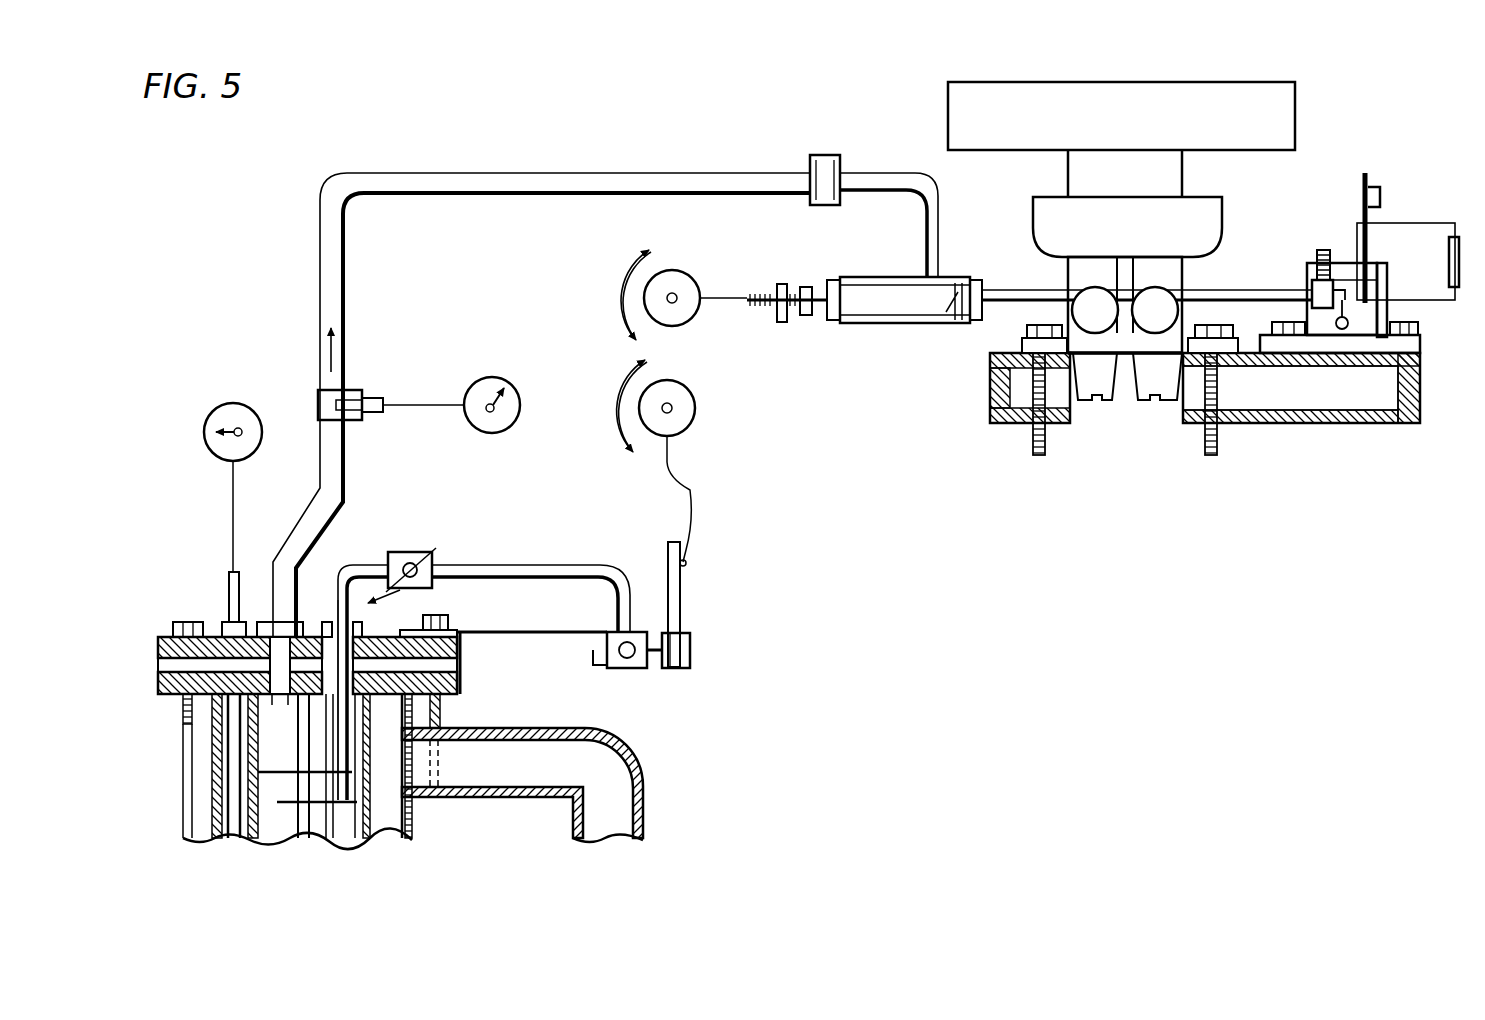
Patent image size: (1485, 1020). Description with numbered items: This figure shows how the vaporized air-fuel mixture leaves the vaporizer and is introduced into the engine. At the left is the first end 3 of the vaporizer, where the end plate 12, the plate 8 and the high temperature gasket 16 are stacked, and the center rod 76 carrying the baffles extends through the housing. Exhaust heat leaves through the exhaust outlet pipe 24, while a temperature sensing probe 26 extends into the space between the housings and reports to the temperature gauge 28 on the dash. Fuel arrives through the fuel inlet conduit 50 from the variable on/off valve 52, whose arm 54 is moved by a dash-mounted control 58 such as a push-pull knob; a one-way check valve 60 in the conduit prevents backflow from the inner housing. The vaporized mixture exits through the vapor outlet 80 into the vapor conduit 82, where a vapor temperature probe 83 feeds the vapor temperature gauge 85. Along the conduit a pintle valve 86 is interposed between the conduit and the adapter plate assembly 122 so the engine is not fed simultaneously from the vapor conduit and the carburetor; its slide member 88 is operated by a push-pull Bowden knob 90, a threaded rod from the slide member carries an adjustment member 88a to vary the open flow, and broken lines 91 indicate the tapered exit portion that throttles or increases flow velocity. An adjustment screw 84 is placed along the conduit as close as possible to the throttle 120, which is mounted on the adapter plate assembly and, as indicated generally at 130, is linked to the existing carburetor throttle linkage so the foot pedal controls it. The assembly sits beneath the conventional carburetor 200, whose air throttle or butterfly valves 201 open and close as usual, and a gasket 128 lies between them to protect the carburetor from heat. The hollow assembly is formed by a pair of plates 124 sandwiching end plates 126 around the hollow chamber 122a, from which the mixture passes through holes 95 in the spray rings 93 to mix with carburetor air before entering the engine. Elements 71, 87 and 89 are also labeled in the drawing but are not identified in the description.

The first end 3 is at (122, 590).
The plate 8 is at (455, 690).
The end plate 12 is at (453, 645).
The high temperature gasket 16 is at (158, 660).
The exhaust outlet pipe 24 is at (618, 742).
The temperature sensing probe 26 is at (229, 590).
The temperature gauge 28 is at (228, 402).
The fuel inlet conduit 50 is at (537, 566).
The variable on/off valve 52 is at (606, 667).
The arm 54 is at (680, 577).
The control 58 is at (697, 408).
The one-way check valve 60 is at (402, 552).
The tube 71 is at (372, 697).
The center rod 76 is at (288, 698).
The vapor outlet 80 is at (283, 647).
The vapor conduit 82 is at (402, 172).
The vapor temperature probe 83 is at (370, 390).
The fitting 84 is at (1323, 246).
The vapor temperature gauge 85 is at (486, 377).
The pintle valve 86 is at (898, 344).
The coupling 87 is at (826, 155).
The slide member 88 is at (766, 310).
The adjustment member 88a is at (803, 320).
The pipe 89 is at (882, 173).
The push-pull Bowden knob 90 is at (678, 274).
The broken lines 91 is at (955, 290).
The spray rings 93 is at (1183, 380).
The holes 95 is at (1135, 402).
The throttle 120 is at (1343, 220).
The adapter plate assembly 122 is at (936, 430).
The hollow chamber 122a is at (1272, 417).
The plates 124 is at (1357, 368).
The end plates 126 is at (1425, 361).
The gasket 128 is at (1238, 337).
The linkage 130 is at (1417, 188).
The carburetor 200 is at (1228, 232).
The air throttle 201 is at (1068, 272).